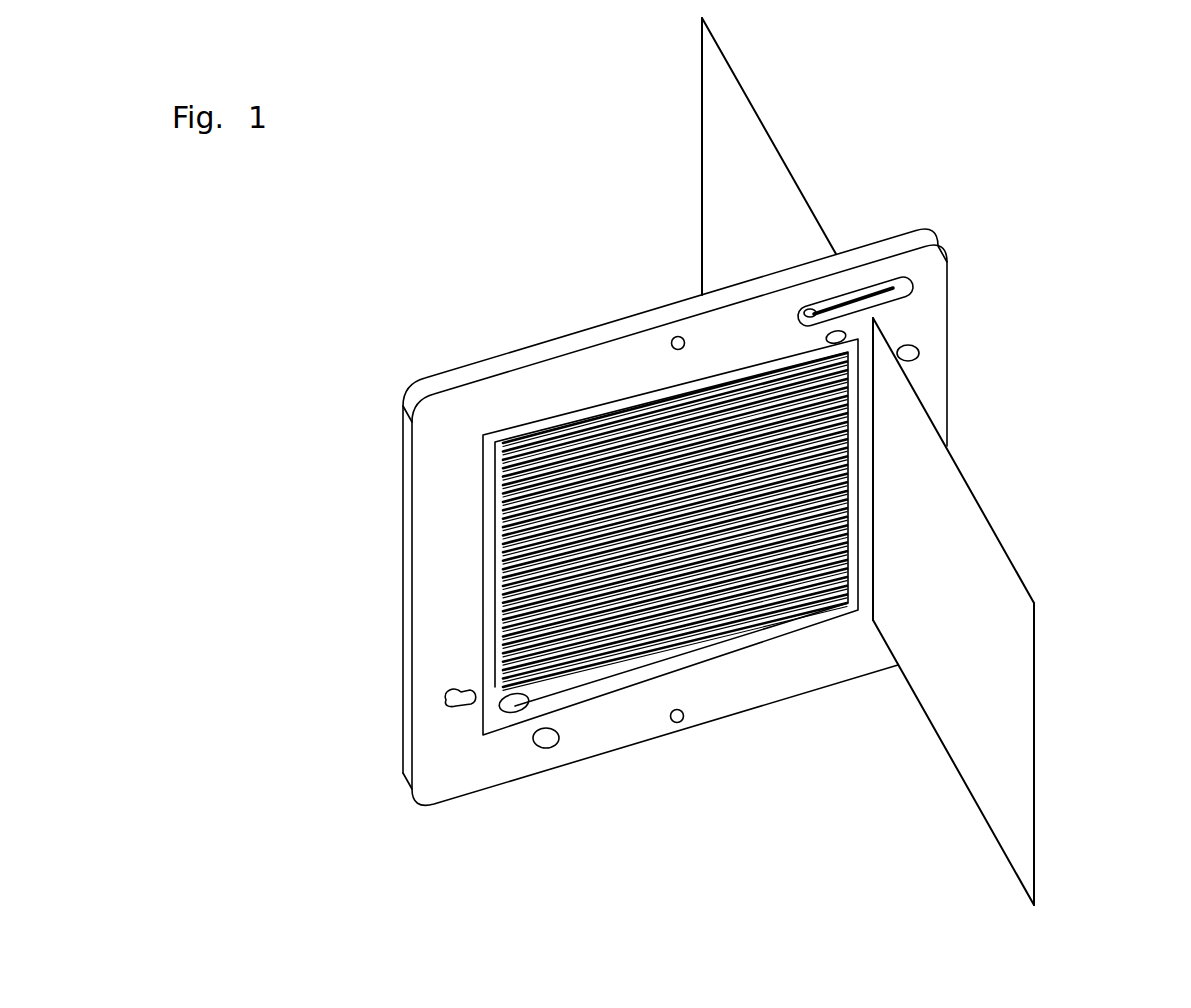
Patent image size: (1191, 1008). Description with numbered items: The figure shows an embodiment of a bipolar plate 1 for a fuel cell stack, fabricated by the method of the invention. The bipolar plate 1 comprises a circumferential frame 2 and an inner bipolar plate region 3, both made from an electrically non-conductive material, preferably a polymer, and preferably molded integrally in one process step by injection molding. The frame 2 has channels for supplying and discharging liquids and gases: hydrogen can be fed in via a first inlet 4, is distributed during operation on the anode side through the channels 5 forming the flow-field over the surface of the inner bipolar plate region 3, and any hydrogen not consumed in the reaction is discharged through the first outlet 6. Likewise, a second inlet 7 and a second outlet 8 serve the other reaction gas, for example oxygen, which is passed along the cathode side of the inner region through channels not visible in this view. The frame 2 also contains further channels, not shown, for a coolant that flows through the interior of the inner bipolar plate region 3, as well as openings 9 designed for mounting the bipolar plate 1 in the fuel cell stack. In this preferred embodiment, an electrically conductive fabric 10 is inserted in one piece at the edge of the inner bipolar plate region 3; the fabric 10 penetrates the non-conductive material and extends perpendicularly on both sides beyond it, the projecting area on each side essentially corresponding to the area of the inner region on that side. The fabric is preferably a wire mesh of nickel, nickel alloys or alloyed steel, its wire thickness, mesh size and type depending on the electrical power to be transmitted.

The bipolar plate 1 is at (681, 461).
The circumferential frame 2 is at (447, 478).
The inner bipolar plate region 3 is at (600, 562).
The first inlet 4 is at (862, 298).
The channels 5 is at (623, 472).
The first outlet 6 is at (602, 786).
The second inlet 7 is at (440, 693).
The second outlet 8 is at (919, 354).
The openings 9 is at (667, 342).
The electrically conductive fabric 10 is at (966, 634).